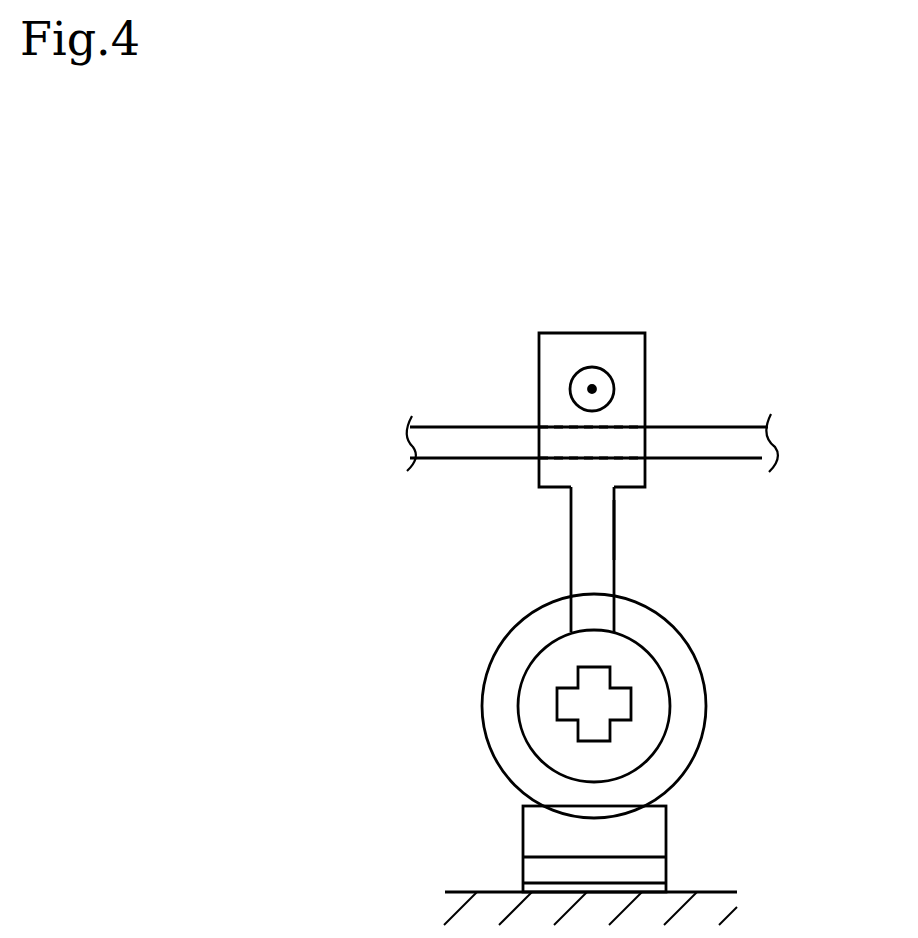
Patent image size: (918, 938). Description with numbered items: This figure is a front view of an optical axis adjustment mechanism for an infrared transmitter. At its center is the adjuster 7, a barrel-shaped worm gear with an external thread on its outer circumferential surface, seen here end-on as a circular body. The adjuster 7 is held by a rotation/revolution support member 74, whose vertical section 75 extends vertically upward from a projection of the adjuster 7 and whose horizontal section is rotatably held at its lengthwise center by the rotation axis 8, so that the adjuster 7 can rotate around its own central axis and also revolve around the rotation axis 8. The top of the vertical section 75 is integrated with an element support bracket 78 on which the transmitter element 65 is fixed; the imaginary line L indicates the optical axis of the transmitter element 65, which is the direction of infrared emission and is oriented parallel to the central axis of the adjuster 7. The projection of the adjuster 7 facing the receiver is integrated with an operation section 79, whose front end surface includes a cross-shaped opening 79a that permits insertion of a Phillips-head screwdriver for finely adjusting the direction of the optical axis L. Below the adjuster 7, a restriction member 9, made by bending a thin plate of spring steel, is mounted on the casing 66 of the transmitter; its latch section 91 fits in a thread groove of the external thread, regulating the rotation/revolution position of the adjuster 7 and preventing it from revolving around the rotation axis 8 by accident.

The adjuster 7 is at (693, 647).
The rotation axis 8 is at (707, 427).
The restriction member 9 is at (523, 826).
The transmitter element 65 is at (573, 400).
The casing 66 is at (715, 891).
The rotation/revolution support member 74 is at (616, 521).
The vertical section 75 is at (588, 548).
The element support bracket 78 is at (558, 360).
The operation section 79 is at (518, 690).
The opening 79a is at (592, 672).
The latch section 91 is at (638, 829).
The optical axis L is at (592, 389).